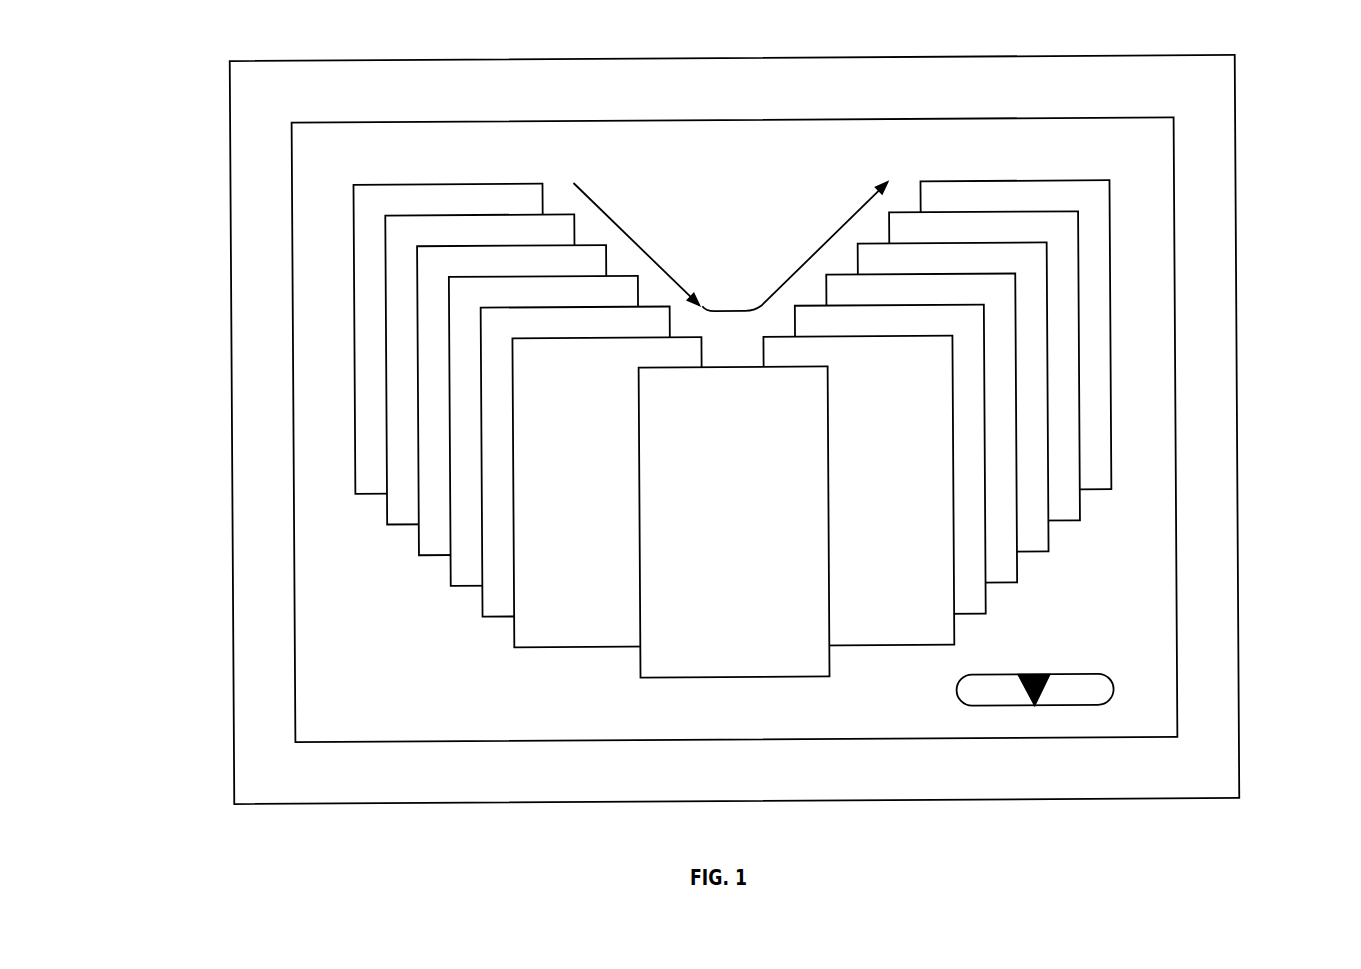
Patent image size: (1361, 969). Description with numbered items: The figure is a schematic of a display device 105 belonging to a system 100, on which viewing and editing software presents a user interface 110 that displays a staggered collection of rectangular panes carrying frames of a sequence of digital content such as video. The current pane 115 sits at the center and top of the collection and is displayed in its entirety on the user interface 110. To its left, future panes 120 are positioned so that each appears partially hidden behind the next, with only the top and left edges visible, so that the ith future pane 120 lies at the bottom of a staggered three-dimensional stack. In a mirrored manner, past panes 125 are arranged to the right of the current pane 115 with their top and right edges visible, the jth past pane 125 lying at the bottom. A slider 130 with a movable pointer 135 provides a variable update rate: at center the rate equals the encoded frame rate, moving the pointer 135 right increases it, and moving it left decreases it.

The system 100 is at (1267, 75).
The display device 105 is at (1237, 769).
The user interface 110 is at (1176, 676).
The current pane 115 is at (752, 546).
The future pane 120 is at (513, 397).
The past pane 125 is at (953, 397).
The slider 130 is at (1150, 756).
The pointer 135 is at (1182, 772).